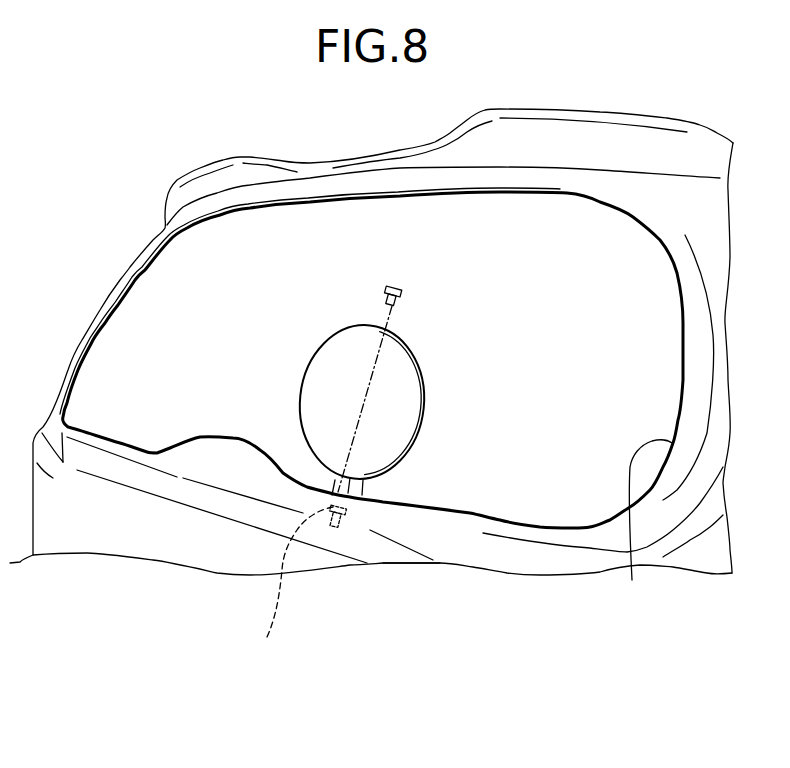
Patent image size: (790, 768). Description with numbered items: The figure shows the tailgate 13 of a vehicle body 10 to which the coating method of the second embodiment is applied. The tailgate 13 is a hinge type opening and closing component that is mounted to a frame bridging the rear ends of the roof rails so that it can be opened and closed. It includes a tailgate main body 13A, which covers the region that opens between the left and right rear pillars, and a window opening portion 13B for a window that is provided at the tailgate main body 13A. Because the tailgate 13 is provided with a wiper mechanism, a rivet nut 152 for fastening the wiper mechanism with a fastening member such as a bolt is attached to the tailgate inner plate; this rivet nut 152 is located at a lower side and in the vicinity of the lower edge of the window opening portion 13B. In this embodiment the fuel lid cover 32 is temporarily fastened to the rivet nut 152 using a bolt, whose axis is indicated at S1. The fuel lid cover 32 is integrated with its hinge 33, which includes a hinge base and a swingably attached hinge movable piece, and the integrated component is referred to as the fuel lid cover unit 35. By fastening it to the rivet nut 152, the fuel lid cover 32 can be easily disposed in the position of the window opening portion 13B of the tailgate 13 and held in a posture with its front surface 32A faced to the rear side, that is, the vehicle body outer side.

The vehicle body 10 is at (125, 258).
The tailgate 13 is at (527, 581).
The tailgate main body 13A is at (537, 558).
The window opening portion 13B is at (632, 580).
The fuel lid cover unit 35 is at (389, 363).
The fuel lid cover 32 is at (404, 377).
The front surface 32A is at (400, 392).
The hinge 33 is at (335, 485).
The screw S1 is at (393, 290).
The rivet nut 152 is at (296, 588).